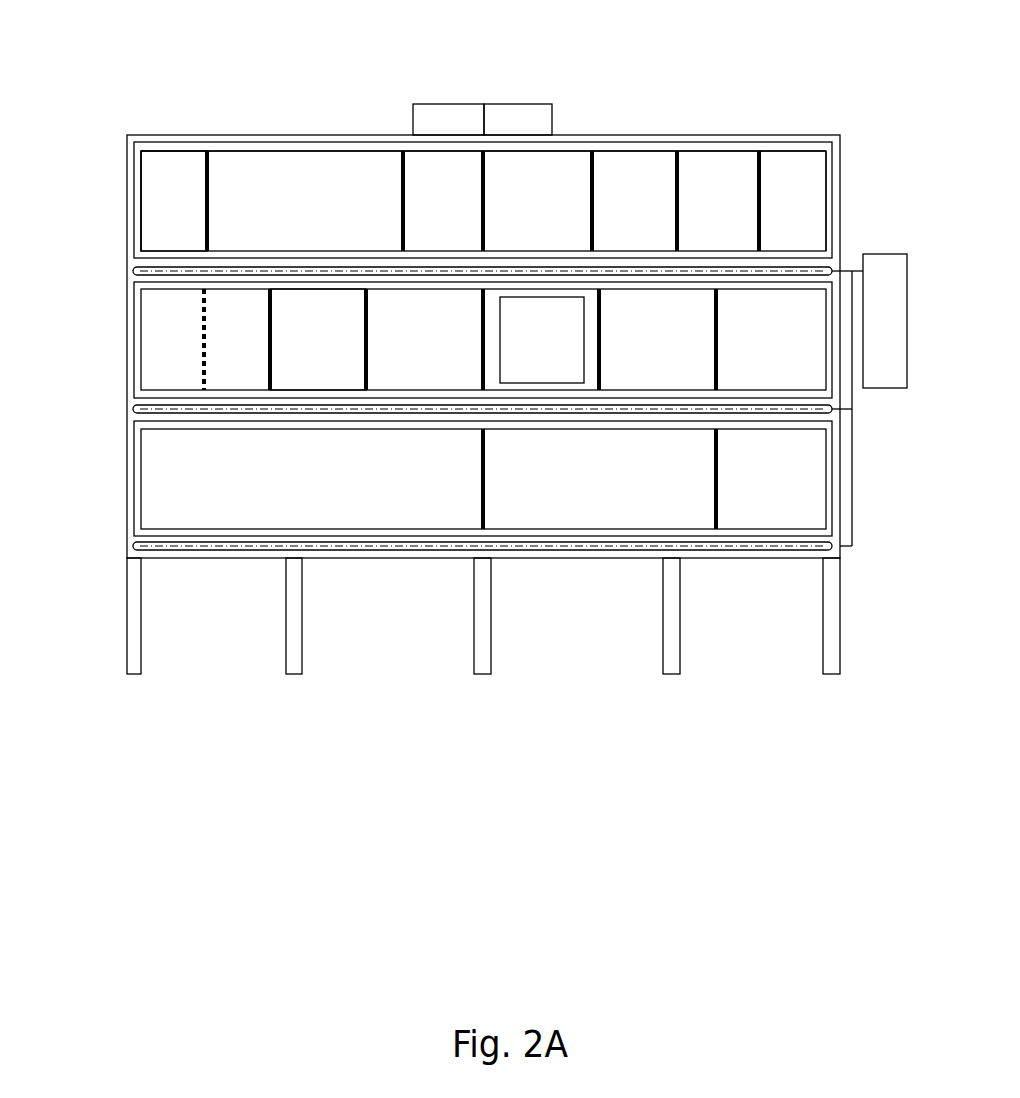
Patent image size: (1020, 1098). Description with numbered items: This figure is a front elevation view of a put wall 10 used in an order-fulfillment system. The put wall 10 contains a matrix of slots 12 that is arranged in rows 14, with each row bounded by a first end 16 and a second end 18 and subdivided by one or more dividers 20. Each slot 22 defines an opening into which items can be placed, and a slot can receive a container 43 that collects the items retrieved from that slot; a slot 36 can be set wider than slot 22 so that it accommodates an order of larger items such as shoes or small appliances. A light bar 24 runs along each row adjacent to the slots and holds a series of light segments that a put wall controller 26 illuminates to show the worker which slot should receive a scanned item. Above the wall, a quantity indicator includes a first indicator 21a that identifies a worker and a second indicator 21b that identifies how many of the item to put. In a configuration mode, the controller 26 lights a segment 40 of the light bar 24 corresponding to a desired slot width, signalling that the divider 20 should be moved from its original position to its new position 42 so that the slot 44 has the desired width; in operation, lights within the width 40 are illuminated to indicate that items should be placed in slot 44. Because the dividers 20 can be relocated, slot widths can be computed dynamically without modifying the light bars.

The put wall 10 is at (86, 81).
The matrix of slots 12 is at (167, 151).
The rows 14 is at (96, 203).
The first end 16 is at (141, 182).
The second end 18 is at (826, 180).
The divider 20 is at (212, 177).
The first indicator 21a is at (447, 104).
The second indicator 21b is at (505, 104).
The slot 22 is at (159, 212).
The light bar 24 is at (133, 271).
The put wall controller 26 is at (907, 277).
The slot 36 is at (345, 175).
The segment 40 is at (270, 438).
The divider position 42 is at (272, 325).
The container 43 is at (585, 367).
The slot 44 is at (303, 362).